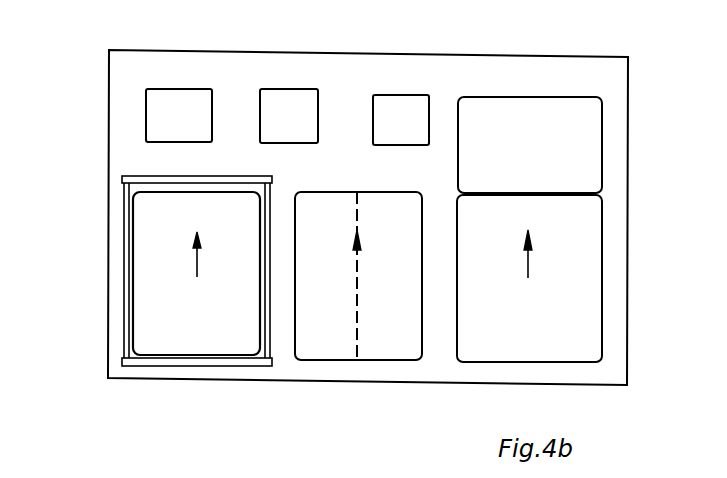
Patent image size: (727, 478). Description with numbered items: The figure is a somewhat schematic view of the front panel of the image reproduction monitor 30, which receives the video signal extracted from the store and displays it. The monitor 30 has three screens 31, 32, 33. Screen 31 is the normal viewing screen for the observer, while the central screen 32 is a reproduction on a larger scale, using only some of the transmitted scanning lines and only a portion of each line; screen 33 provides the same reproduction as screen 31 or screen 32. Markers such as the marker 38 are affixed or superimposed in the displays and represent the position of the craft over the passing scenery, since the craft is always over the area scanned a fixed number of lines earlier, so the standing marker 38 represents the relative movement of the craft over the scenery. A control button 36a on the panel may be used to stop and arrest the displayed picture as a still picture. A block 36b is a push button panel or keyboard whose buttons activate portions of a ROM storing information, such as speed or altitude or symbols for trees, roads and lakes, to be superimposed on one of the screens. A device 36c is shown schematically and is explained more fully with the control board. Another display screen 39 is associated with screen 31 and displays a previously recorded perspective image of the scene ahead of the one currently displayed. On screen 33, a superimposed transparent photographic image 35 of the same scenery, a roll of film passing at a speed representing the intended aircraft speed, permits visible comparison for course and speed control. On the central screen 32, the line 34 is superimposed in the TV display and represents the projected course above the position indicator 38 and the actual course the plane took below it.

The monitor 30 is at (588, 70).
The screen 31 is at (580, 255).
The screen 32 is at (377, 342).
The screen 33 is at (187, 323).
The line 34 is at (352, 288).
The superimposed transparent photographic image 35 is at (130, 198).
The control button 36a is at (179, 105).
The push button panel 36b is at (398, 105).
The device 36c is at (283, 107).
The marker 38 is at (194, 255).
The display screen 39 is at (479, 112).